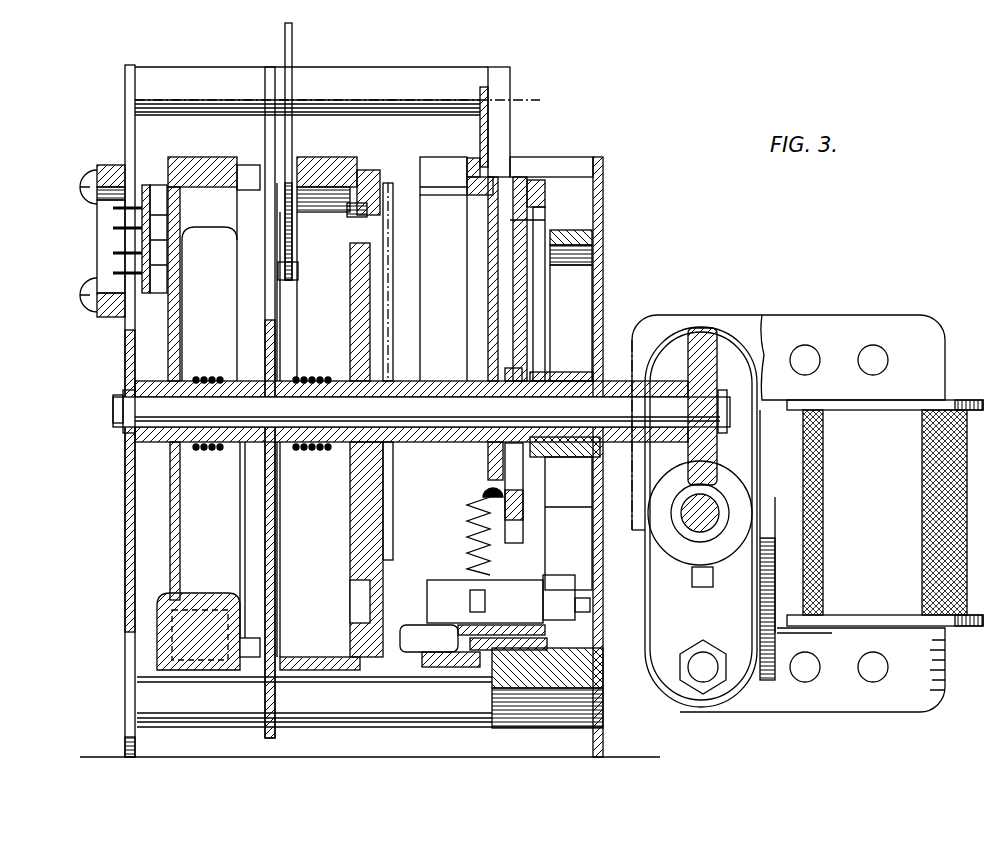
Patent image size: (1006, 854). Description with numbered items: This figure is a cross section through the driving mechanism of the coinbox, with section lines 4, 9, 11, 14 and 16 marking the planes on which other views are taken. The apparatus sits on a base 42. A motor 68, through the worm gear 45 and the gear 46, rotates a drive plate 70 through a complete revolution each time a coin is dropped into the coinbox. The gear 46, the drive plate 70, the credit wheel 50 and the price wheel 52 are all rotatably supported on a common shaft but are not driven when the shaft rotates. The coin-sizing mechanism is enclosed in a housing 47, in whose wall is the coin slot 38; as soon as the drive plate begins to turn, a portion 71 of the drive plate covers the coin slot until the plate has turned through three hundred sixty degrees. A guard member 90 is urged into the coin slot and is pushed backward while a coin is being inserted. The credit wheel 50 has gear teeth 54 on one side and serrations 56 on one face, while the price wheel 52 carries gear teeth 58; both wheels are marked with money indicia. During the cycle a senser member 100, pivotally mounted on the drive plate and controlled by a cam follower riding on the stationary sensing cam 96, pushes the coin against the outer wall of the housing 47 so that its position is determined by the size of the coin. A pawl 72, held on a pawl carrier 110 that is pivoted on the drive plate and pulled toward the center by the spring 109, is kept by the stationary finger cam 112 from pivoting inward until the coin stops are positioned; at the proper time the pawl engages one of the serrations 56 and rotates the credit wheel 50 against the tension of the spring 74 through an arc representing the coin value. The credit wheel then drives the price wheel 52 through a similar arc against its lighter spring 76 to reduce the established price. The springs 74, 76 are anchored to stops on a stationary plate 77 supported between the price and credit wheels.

The section line 4- 4 is at (475, 65).
The section line 9- 9 is at (405, 163).
The section line 11- 11 is at (413, 163).
The section line 14- 14 is at (280, 38).
The section line 16- 16 is at (93, 83).
The coin slot 38 is at (517, 185).
The base 42 is at (592, 742).
The worm gear 45 is at (688, 533).
The gear 46 is at (703, 337).
The housing 47 is at (578, 157).
The credit wheel 50 is at (325, 160).
The price wheel 52 is at (189, 160).
The gear teeth 54 is at (364, 170).
The serrations 56 is at (383, 208).
The gear teeth 58 is at (246, 168).
The motor 68 is at (870, 318).
The drive plate 70 is at (551, 195).
The portion of the drive plate 71 is at (507, 222).
The pawl 72 is at (400, 625).
The spring 74 is at (318, 454).
The spring 76 is at (204, 375).
The stationary plate 77 is at (277, 570).
The guard member 90 is at (510, 100).
The sensing cam 96 is at (537, 455).
The senser member 100 is at (526, 532).
The spring 109 is at (472, 512).
The pawl carrier 110 is at (545, 632).
The finger cam 112 is at (578, 238).